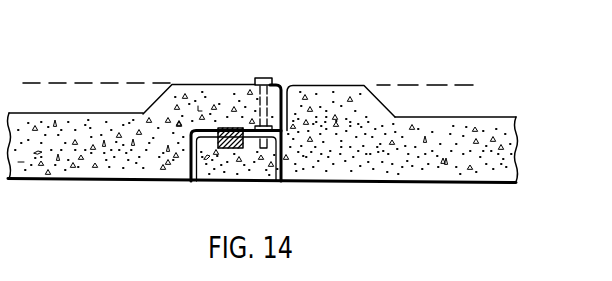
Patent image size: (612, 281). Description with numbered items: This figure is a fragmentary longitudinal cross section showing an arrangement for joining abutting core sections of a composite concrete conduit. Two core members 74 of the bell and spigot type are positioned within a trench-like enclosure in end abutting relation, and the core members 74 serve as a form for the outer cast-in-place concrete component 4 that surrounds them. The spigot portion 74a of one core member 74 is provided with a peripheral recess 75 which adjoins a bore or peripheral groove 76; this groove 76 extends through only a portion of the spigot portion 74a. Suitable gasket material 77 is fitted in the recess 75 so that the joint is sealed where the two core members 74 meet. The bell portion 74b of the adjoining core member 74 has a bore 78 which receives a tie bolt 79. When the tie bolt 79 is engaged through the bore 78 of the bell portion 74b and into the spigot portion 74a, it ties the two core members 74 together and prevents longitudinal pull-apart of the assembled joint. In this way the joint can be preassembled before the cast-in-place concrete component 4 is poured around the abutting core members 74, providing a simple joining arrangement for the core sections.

The cast-in-place concrete component 4 is at (90, 83).
The core member 74 is at (97, 173).
The spigot portion 74a is at (333, 171).
The bell portion 74b is at (163, 167).
The peripheral recess 75 is at (231, 148).
The peripheral groove 76 is at (262, 150).
The gasket material 77 is at (223, 130).
The bore 78 is at (284, 88).
The tie bolt 79 is at (268, 79).